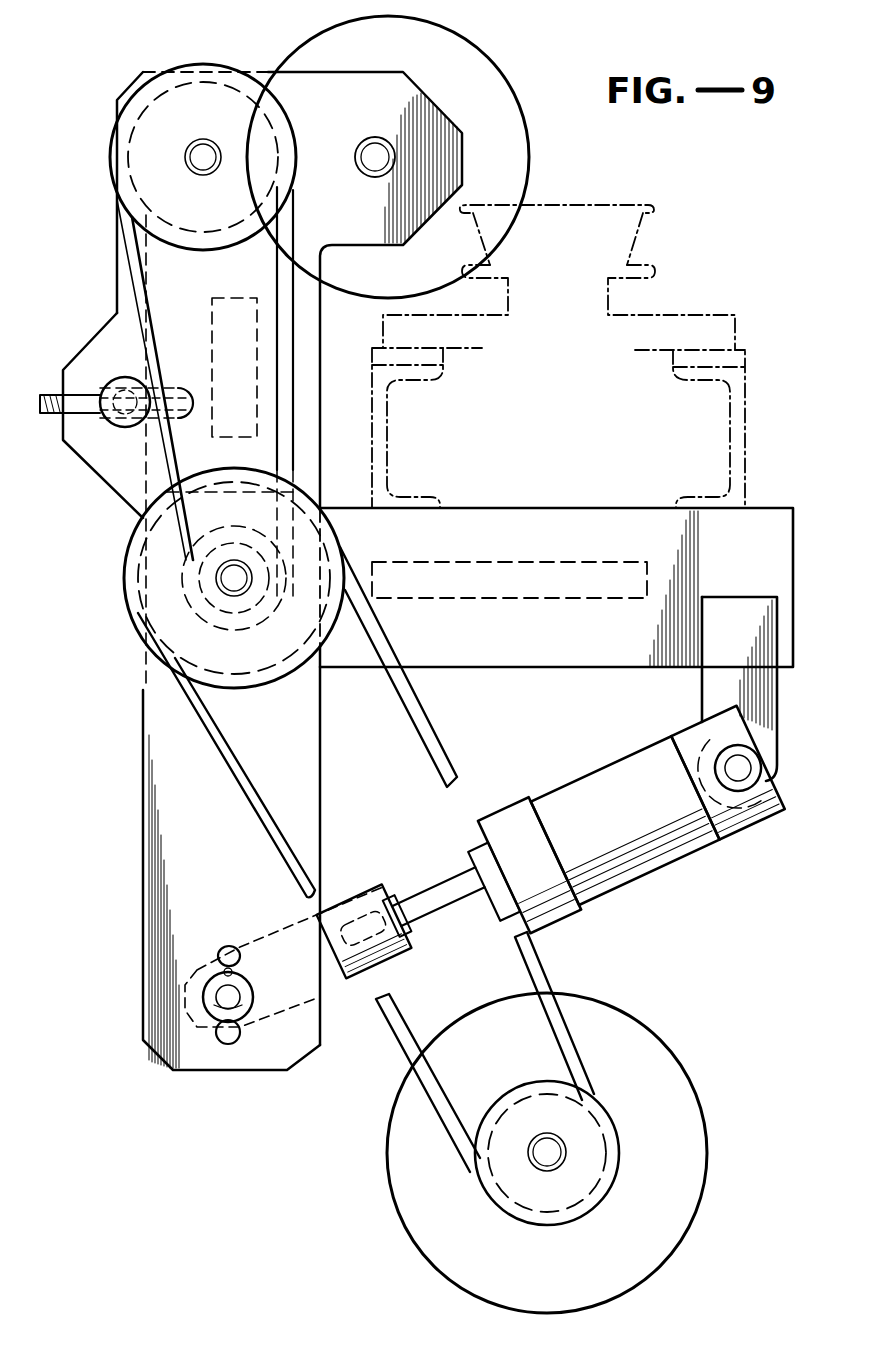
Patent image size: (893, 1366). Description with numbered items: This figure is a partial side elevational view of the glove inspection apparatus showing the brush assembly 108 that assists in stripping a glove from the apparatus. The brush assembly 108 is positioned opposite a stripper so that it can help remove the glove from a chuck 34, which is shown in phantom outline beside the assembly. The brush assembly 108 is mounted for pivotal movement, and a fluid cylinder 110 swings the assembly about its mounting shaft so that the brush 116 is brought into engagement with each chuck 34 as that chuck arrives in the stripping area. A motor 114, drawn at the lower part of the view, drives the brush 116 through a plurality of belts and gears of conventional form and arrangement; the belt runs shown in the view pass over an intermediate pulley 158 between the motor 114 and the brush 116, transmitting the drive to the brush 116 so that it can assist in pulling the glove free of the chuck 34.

The chuck 34 is at (665, 276).
The brush assembly 108 is at (128, 72).
The fluid cylinder 110 is at (600, 787).
The motor 114 is at (568, 1268).
The brush 116 is at (487, 95).
The idler pulley 158 is at (126, 585).